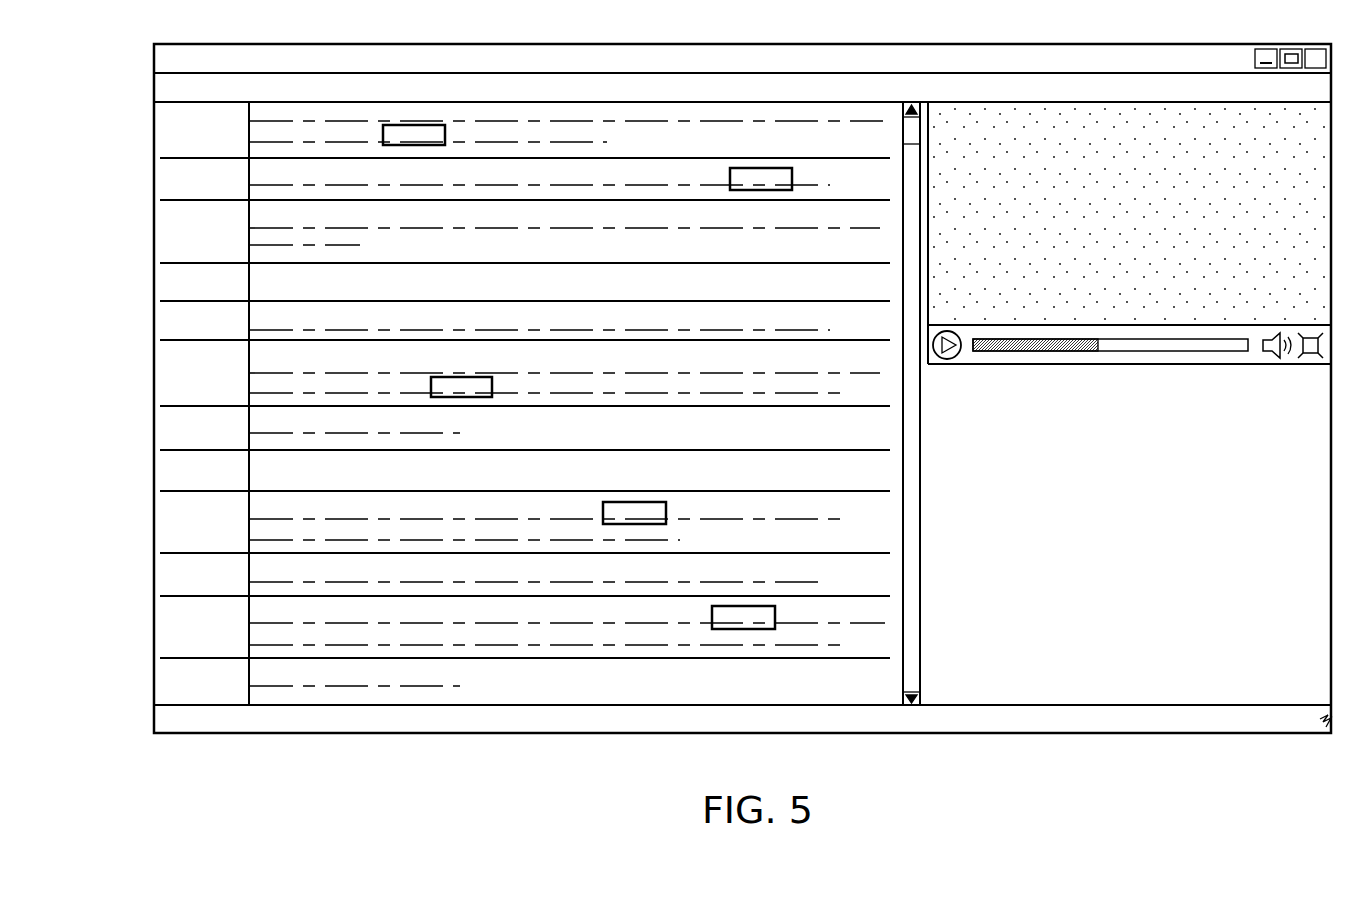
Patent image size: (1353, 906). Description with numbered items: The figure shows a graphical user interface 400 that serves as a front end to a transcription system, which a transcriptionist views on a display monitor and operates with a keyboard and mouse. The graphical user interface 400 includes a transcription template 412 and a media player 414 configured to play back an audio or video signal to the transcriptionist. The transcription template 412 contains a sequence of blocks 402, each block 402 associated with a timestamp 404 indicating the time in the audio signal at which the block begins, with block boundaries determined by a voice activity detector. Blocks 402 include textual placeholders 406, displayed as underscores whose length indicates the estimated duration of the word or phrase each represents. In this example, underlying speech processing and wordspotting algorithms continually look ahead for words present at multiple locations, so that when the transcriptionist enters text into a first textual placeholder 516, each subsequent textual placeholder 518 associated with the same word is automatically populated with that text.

The graphical user interface 400 is at (808, 769).
The block 402 is at (248, 237).
The timestamp 404 is at (177, 283).
The textual placeholder 406 is at (705, 121).
The transcription template 412 is at (320, 708).
The media player 414 is at (1100, 102).
The first textual placeholder 516 is at (383, 125).
The subsequent textual placeholder 518 is at (490, 376).